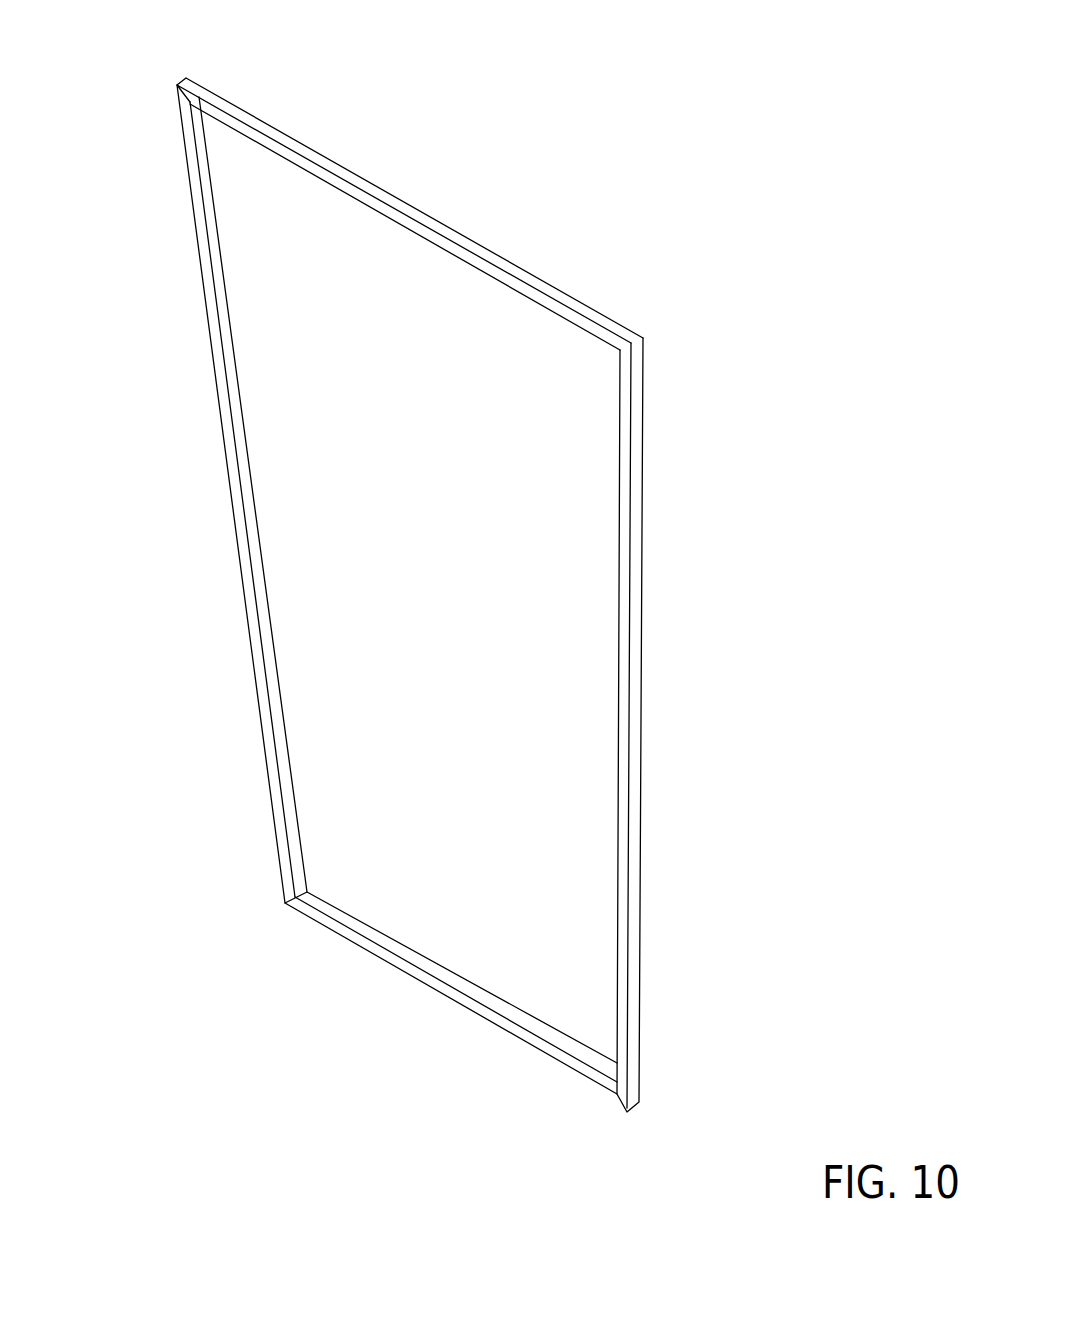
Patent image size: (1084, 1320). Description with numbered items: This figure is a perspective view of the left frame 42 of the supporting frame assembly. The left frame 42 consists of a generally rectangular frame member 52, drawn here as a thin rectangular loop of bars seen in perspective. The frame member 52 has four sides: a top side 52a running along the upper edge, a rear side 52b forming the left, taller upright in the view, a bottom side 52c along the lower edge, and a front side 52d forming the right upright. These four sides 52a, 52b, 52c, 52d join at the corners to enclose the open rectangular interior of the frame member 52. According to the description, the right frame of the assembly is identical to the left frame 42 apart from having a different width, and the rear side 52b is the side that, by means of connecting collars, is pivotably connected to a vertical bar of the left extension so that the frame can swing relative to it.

The left frame 42 is at (407, 579).
The frame member 52 is at (407, 595).
The top side 52a is at (463, 253).
The rear side 52b is at (243, 452).
The bottom side 52c is at (368, 933).
The front side 52d is at (640, 593).